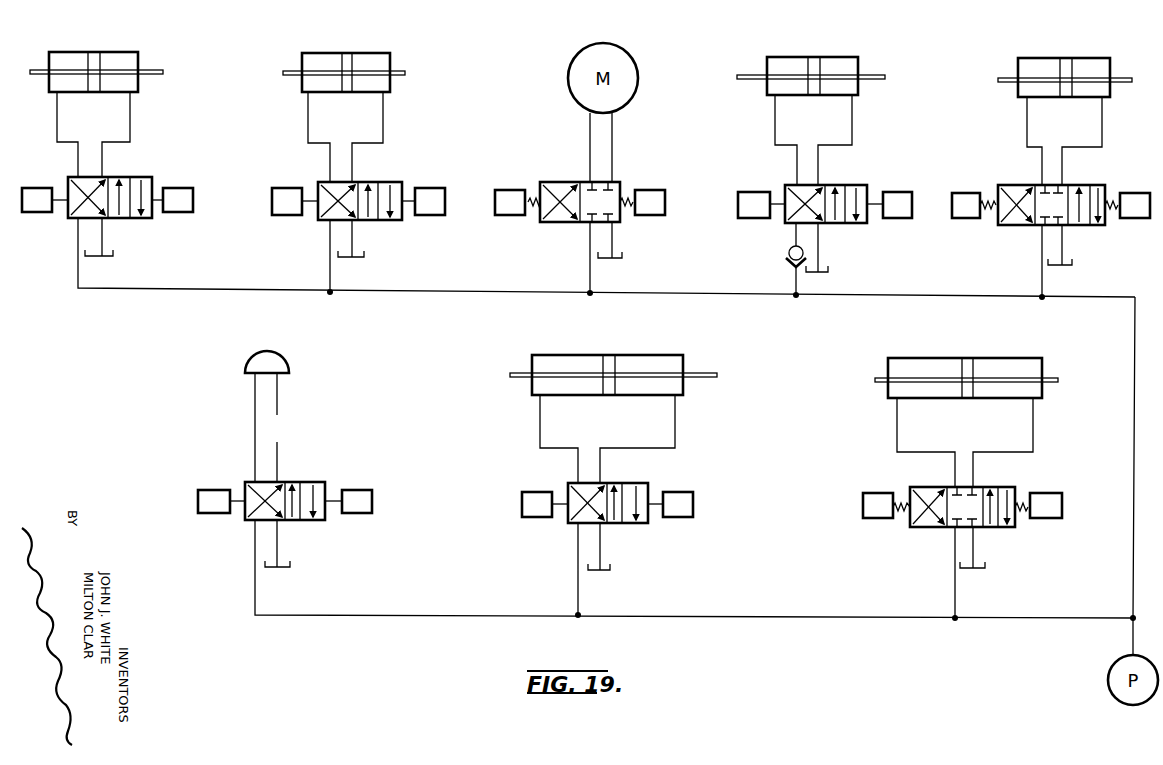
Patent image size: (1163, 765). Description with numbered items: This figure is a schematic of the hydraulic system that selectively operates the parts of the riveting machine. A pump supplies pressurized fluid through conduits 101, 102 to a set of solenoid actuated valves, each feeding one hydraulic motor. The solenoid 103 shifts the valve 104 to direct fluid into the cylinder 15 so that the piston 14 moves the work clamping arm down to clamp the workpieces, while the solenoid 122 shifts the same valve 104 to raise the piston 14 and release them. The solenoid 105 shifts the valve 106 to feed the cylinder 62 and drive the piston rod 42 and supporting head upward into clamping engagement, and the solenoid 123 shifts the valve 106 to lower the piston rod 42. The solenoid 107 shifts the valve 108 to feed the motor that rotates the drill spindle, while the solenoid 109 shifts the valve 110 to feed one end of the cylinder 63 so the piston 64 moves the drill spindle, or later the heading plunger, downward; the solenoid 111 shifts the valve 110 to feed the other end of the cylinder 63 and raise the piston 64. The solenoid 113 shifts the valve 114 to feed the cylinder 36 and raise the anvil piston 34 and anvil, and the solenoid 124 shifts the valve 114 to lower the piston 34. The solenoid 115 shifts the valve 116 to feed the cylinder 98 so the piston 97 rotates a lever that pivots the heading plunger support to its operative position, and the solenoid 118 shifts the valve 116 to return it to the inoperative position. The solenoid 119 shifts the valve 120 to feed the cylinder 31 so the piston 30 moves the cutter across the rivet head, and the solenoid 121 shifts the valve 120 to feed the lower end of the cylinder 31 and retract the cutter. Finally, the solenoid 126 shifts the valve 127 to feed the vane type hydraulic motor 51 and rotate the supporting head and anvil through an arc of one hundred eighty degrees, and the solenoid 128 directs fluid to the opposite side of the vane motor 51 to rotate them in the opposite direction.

The piston 14 is at (870, 73).
The cylinder 15 is at (790, 58).
The piston 30 is at (100, 66).
The cylinder 31 is at (75, 53).
The anvil piston 34 is at (973, 369).
The cylinder 36 is at (925, 359).
The piston rod 42 is at (612, 366).
The vane type hydraulic motor 51 is at (282, 365).
The piston 62 is at (578, 356).
The cylinder 63 is at (1055, 61).
The piston 64 is at (1072, 69).
The piston 97 is at (398, 72).
The cylinder 98 is at (318, 56).
The conduit 101 is at (1133, 555).
The conduit 102 is at (1050, 616).
The solenoid 103 is at (900, 192).
The valve 104 is at (848, 186).
The solenoid 105 is at (693, 492).
The valve 106 is at (634, 484).
The solenoid 107 is at (510, 190).
The valve 108 is at (556, 183).
The solenoid 109 is at (1133, 193).
The valve 110 is at (1075, 186).
The solenoid 111 is at (968, 193).
The solenoid 113 is at (1050, 493).
The valve 114 is at (995, 488).
The solenoid 115 is at (430, 190).
The valve 116 is at (380, 183).
The solenoid 118 is at (284, 188).
The solenoid 119 is at (183, 190).
The valve 120 is at (131, 178).
The solenoid 121 is at (33, 190).
The solenoid 122 is at (750, 192).
The solenoid 123 is at (530, 492).
The solenoid 124 is at (875, 493).
The solenoid 126 is at (365, 490).
The valve 127 is at (293, 483).
The solenoid 128 is at (205, 490).